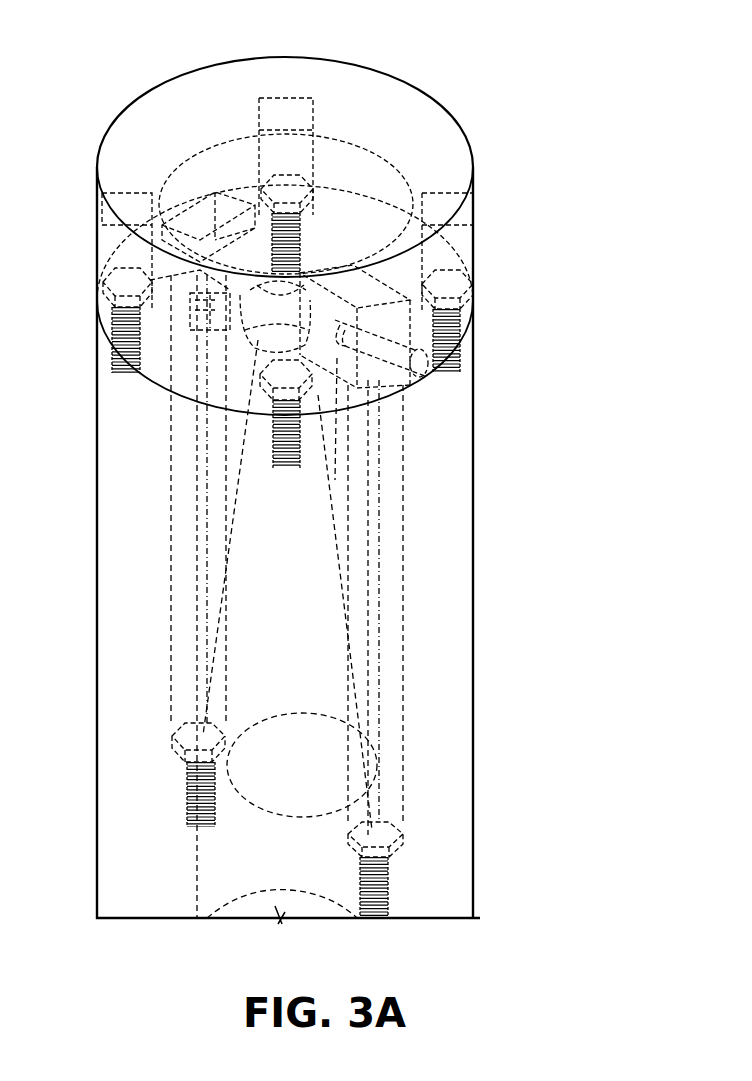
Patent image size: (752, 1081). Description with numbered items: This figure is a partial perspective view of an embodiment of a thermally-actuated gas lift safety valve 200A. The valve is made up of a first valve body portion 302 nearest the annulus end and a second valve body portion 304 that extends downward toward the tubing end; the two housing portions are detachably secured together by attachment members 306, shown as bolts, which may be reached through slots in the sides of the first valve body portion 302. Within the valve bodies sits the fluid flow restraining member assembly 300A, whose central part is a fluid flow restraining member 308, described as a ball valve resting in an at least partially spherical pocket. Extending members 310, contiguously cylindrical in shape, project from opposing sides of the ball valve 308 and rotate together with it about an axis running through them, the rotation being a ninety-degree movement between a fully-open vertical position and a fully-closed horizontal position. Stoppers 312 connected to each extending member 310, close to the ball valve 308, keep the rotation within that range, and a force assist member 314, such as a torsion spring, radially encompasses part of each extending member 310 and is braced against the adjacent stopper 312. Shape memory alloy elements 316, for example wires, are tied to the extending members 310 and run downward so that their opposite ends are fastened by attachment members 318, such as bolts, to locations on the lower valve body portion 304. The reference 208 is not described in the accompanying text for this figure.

The thermally-actuated gas lift safety valve 200A is at (433, 66).
The rods 208 is at (257, 575).
The fluid flow restraining member assembly 300A is at (204, 172).
The first valve body portion 302 is at (476, 248).
The second valve body portion 304 is at (476, 525).
The attachment member 306 is at (458, 283).
The fluid flow restraining member 308 is at (320, 300).
The extending member 310 is at (417, 387).
The stopper 312 is at (343, 302).
The force assist member 314 is at (200, 292).
The shape memory alloy element 316 is at (376, 450).
The attachment member 318 is at (190, 790).